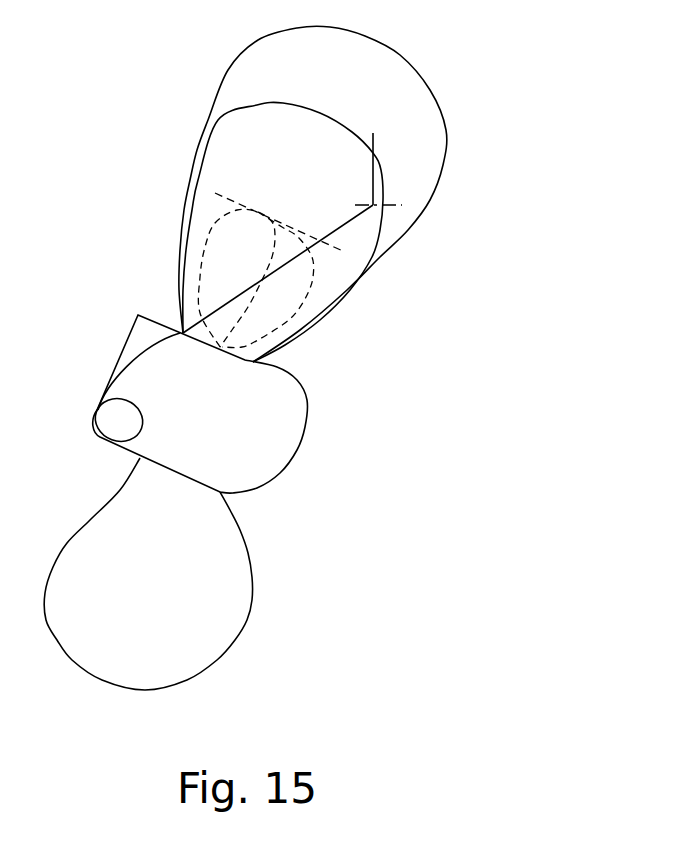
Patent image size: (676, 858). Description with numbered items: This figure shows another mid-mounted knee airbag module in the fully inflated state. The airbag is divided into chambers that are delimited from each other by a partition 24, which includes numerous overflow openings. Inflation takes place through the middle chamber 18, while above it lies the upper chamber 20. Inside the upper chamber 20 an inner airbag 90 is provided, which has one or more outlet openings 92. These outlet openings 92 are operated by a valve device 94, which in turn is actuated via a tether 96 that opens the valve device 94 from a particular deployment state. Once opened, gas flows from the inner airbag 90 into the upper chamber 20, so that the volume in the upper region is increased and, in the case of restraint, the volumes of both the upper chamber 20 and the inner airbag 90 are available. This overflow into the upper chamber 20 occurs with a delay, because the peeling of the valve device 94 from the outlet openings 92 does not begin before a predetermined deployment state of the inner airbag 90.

The middle chamber 18 is at (285, 432).
The upper chamber 20 is at (382, 237).
The partition 24 is at (106, 423).
The inner airbag 90 is at (380, 257).
The outlet openings 92 is at (373, 153).
The valve device 94 is at (372, 188).
The tether 96 is at (207, 308).